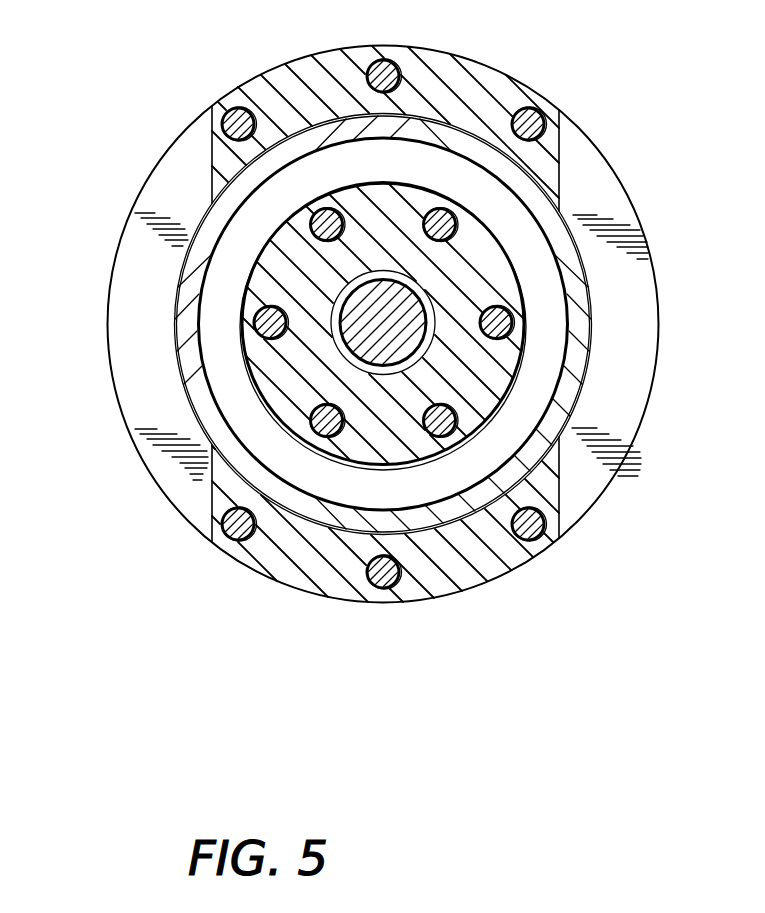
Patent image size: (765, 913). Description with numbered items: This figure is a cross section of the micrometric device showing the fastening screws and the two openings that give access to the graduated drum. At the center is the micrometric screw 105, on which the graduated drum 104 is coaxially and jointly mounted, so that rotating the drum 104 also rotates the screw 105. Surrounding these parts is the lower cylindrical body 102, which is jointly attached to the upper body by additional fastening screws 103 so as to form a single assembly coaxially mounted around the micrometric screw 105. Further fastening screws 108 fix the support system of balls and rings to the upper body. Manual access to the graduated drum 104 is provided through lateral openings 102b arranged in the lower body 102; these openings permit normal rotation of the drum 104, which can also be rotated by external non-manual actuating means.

The lower cylindrical body 102 is at (288, 84).
The lateral openings 102b is at (637, 199).
The fastening screws 103 is at (228, 114).
The graduated drum 104 is at (437, 140).
The micrometric screw 105 is at (358, 321).
The fastening screws 108 is at (440, 221).